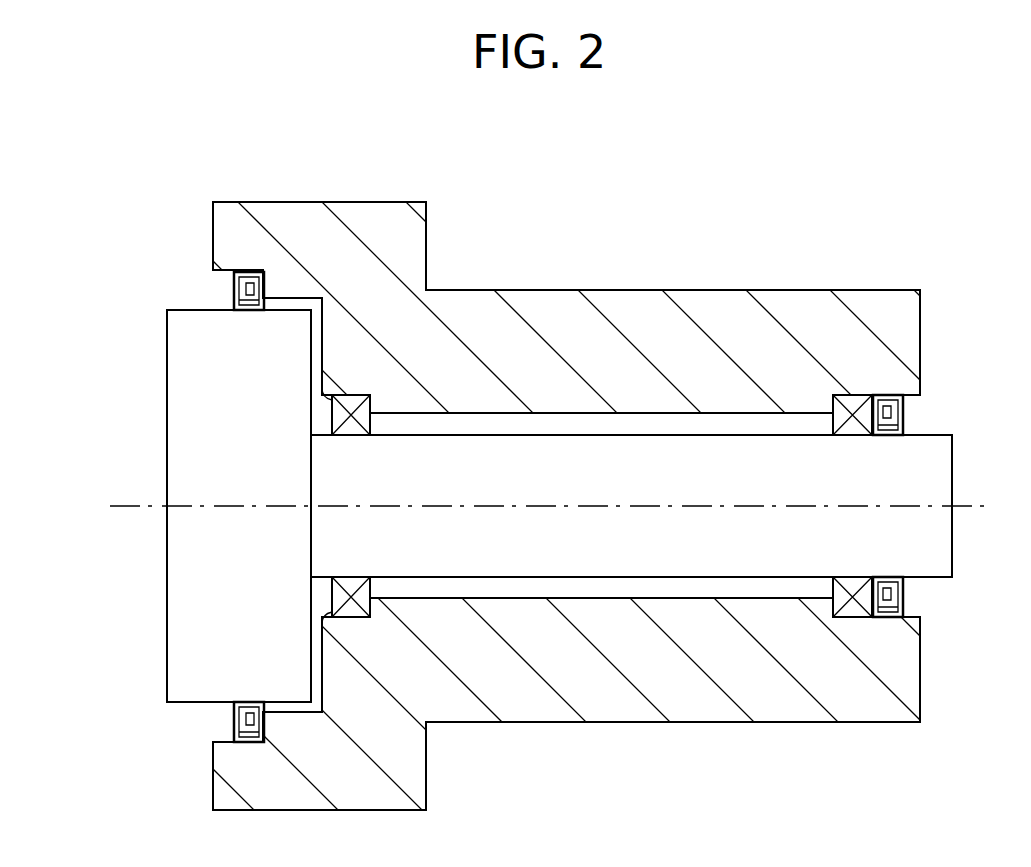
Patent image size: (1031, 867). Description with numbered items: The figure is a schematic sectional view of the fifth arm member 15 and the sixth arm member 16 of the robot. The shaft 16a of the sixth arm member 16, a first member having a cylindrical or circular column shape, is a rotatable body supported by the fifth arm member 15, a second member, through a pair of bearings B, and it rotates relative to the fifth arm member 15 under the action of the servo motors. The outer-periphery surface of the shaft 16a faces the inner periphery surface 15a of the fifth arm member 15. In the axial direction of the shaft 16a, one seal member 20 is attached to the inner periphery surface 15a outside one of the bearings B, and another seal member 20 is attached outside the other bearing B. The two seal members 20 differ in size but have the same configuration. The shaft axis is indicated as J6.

The fifth arm member 15 is at (640, 290).
The inner periphery surface 15a is at (220, 280).
The seal member 20 is at (205, 297).
The bearing B is at (352, 398).
The sixth arm member 16 is at (167, 540).
The shaft 16a is at (593, 552).
The axis J6 is at (980, 508).